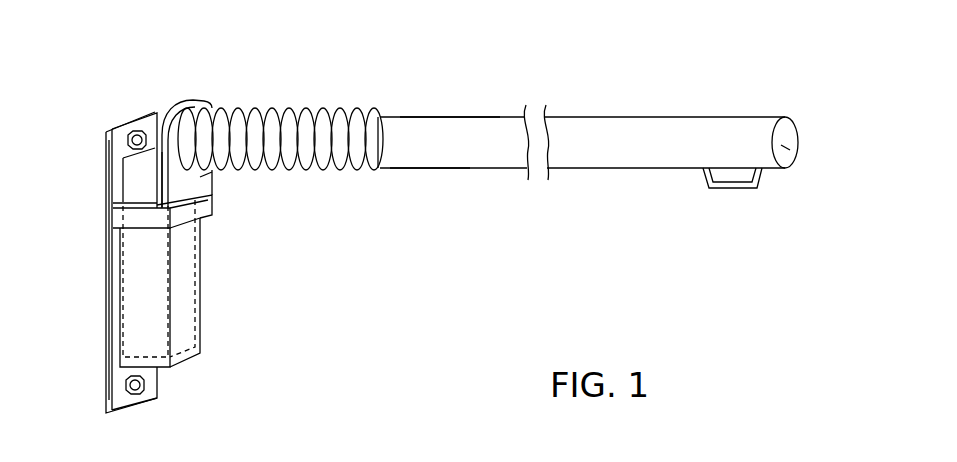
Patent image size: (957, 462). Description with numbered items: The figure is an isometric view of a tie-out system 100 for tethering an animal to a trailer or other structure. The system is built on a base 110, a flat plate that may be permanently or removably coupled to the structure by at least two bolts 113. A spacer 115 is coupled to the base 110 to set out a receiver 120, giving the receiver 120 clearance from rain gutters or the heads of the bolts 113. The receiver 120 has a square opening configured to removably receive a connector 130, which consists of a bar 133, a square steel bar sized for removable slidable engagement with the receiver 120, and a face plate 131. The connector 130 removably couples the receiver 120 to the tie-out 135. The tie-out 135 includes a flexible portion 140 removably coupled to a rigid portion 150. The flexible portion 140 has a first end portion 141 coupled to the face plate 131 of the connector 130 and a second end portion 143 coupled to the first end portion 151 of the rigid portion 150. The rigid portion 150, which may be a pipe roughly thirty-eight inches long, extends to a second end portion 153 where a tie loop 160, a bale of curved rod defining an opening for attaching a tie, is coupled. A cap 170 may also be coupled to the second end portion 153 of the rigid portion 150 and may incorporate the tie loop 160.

The tie-out system 100 is at (301, 342).
The base 110 is at (110, 130).
The bolts 113 is at (137, 131).
The spacer 115 is at (118, 311).
The receiver 120 is at (192, 233).
The connector 130 is at (117, 162).
The face plate 131 is at (200, 180).
The bar 133 is at (135, 191).
The tie-out 135 is at (455, 217).
The flexible portion 140 is at (318, 169).
The first end portion 141 is at (213, 97).
The second end portion 143 is at (373, 101).
The rigid portion 150 is at (608, 132).
The first end portion 151 is at (397, 183).
The second end portion 153 is at (769, 103).
The tie loop 160 is at (722, 183).
The cap 170 is at (781, 148).